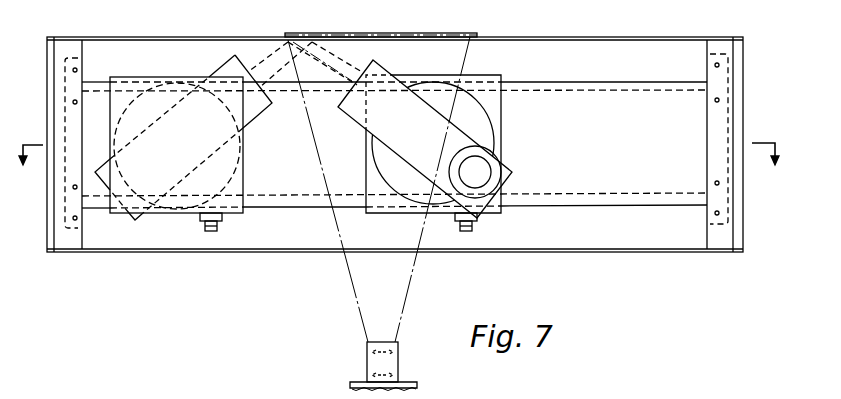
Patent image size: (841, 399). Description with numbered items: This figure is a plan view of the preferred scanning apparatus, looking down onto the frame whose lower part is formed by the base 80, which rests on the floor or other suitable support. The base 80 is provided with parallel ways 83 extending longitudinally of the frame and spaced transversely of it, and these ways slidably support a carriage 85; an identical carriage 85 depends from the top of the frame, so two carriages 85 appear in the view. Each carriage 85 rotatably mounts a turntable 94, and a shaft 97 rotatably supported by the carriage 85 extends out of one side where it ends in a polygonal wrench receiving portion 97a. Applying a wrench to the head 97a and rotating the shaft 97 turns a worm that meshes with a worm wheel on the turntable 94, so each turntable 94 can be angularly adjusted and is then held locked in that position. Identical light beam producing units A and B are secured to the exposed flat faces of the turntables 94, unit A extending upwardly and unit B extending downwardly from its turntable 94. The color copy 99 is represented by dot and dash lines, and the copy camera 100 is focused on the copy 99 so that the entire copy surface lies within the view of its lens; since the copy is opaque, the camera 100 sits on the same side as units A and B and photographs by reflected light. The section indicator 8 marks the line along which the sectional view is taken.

The base 80 is at (550, 240).
The ways 83 is at (567, 91).
The carriage 85 is at (243, 179).
The turntable 94 is at (246, 158).
The shaft 97 is at (203, 222).
The polygonal wrench receiving portion 97a is at (217, 228).
The color copy 99 is at (362, 33).
The copy camera 100 is at (398, 363).
The section line 8- 8 is at (399, 170).
The light beam producing unit A is at (510, 172).
The light beam producing unit B is at (254, 123).